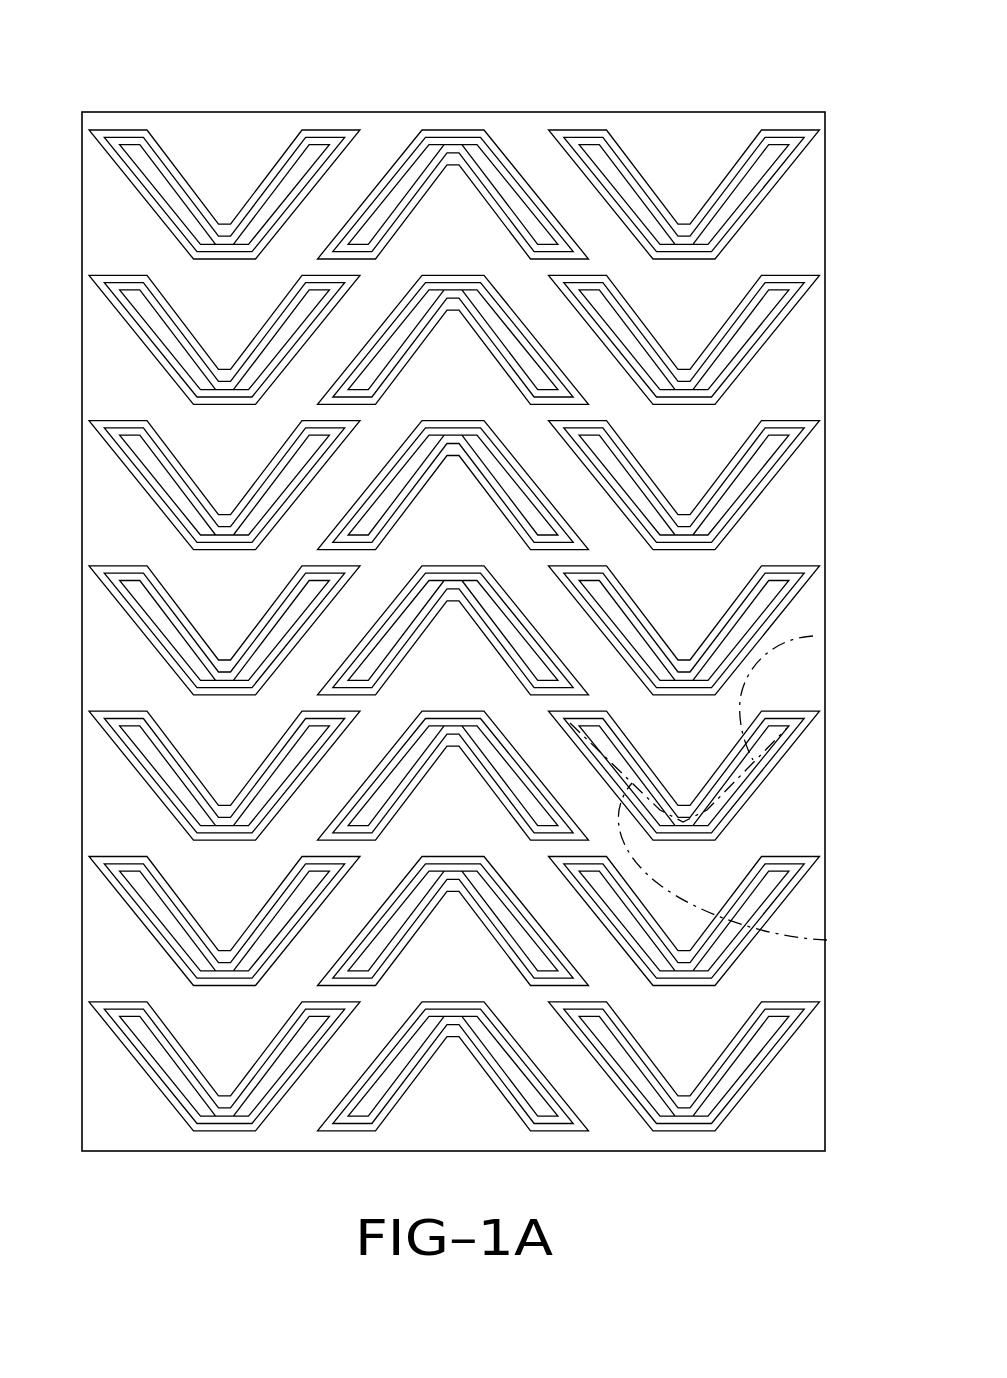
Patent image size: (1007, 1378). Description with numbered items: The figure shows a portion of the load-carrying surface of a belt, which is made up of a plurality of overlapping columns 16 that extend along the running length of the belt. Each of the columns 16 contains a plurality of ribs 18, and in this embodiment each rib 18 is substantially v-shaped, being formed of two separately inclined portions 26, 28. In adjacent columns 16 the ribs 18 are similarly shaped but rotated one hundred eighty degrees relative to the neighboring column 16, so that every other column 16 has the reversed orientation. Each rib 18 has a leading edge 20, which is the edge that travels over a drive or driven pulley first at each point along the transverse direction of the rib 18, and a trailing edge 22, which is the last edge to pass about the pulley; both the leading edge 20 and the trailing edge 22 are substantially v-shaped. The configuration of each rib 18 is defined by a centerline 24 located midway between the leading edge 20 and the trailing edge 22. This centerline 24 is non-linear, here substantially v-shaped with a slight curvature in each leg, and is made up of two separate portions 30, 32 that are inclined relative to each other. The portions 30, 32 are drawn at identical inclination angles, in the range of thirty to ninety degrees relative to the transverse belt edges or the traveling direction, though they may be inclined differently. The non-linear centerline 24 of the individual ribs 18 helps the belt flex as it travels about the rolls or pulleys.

The columns 16 is at (211, 70).
The rib 18 is at (758, 170).
The leading edge 20 is at (695, 402).
The trailing edge 22 is at (785, 275).
The centerline 24 is at (813, 636).
The inclined portion 26 is at (145, 636).
The inclined portion 28 is at (265, 600).
The centerline portion 30 is at (827, 940).
The centerline portion 32 is at (740, 785).